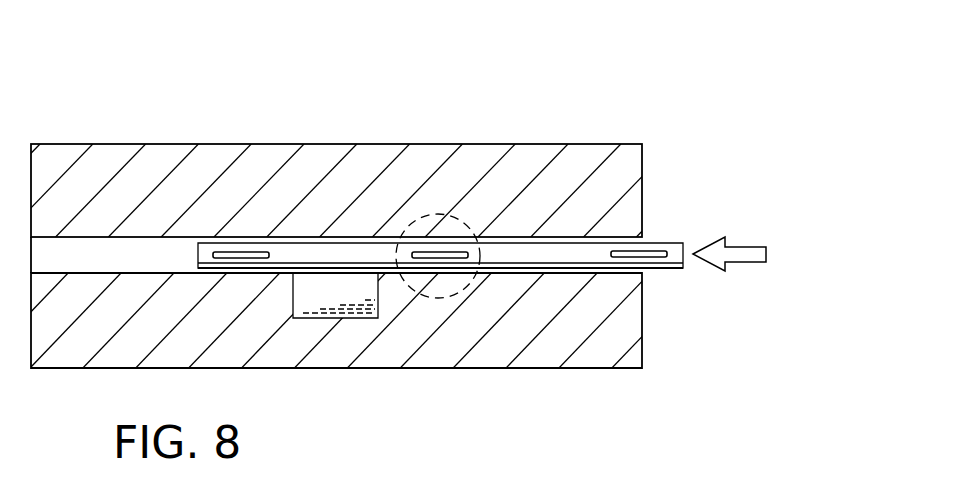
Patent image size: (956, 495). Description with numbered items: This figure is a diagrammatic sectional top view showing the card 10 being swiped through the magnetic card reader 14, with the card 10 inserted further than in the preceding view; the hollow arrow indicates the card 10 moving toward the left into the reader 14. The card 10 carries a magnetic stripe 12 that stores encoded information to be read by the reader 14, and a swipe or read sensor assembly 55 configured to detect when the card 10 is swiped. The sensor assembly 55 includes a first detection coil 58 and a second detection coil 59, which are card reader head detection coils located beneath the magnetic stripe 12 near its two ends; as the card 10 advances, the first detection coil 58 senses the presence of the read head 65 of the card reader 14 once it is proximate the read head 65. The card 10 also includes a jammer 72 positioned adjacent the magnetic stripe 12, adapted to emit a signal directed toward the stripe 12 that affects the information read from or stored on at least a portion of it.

The card 10 is at (700, 230).
The magnetic stripe 12 is at (668, 270).
The magnetic card reader 14 is at (613, 332).
The sensor assembly 55 is at (270, 256).
The first detection coil 58 is at (232, 253).
The second detection coil 59 is at (658, 251).
The read head 65 is at (332, 303).
The jammer 72 is at (439, 252).